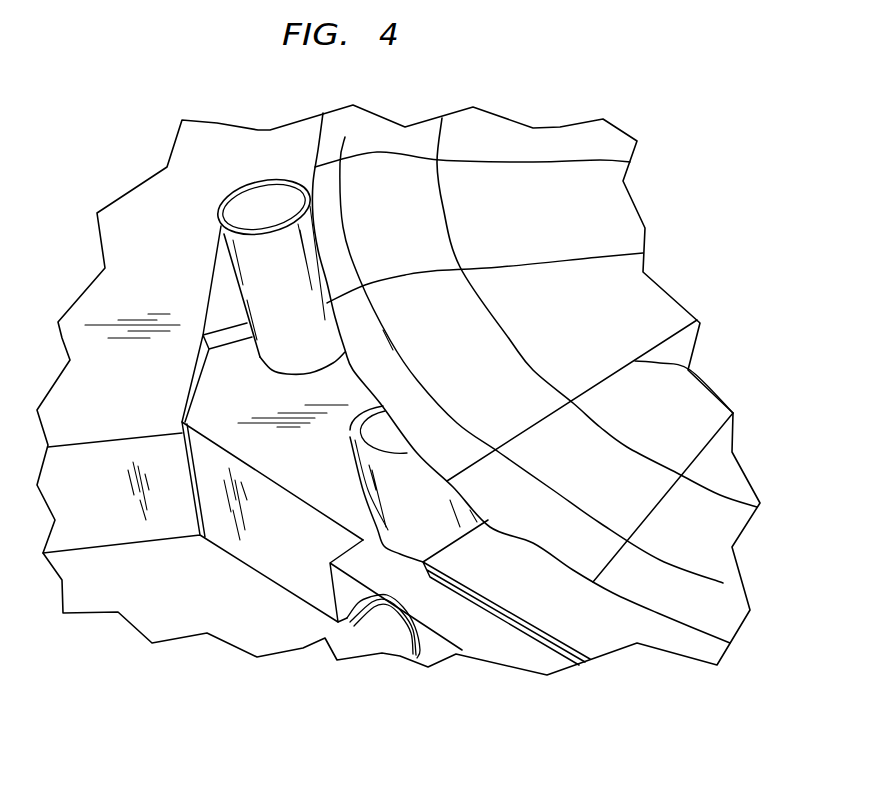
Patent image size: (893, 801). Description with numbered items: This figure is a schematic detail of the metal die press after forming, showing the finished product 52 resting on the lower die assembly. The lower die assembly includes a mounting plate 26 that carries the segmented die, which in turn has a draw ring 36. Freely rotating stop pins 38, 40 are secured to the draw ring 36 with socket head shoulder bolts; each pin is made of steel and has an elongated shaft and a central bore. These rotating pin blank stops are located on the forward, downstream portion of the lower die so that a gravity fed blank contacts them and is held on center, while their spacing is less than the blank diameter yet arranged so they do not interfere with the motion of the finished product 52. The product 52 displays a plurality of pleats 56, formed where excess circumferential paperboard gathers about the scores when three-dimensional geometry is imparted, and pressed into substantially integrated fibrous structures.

The mounting plate 26 is at (250, 540).
The draw ring 36 is at (232, 423).
The freely rotating stop pin 38 is at (267, 277).
The freely rotating stop pin 40 is at (393, 484).
The product 52 is at (566, 251).
The pleats 56 is at (595, 257).